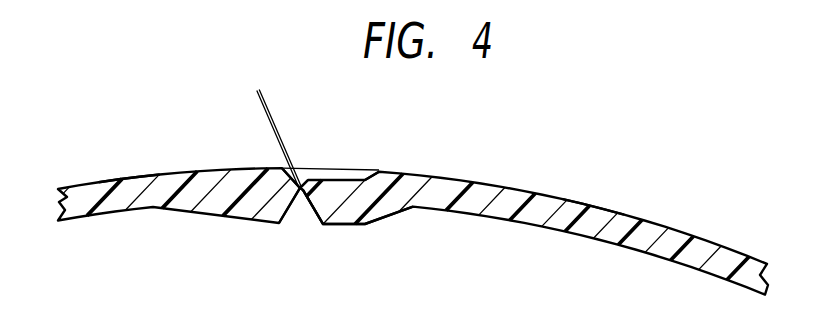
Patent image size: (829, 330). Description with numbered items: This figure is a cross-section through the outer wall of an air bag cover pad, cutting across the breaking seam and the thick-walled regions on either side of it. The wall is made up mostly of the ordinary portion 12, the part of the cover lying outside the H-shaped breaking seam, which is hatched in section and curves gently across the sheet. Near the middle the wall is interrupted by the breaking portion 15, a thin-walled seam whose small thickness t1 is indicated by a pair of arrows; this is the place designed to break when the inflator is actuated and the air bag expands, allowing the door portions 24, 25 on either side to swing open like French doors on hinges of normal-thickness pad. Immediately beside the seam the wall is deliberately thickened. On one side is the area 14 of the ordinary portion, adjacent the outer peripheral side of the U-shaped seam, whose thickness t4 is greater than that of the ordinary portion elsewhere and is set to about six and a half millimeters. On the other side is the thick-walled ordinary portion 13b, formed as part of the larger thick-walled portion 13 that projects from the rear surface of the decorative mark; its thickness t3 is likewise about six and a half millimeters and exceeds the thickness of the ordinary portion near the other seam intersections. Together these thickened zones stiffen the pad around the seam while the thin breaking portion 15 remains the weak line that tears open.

The ordinary portion 12 is at (670, 227).
The thick-walled portion 13 is at (383, 208).
The thick-walled ordinary portion 13b is at (374, 170).
The thick-walled area 14 is at (243, 212).
The breaking portion 15 is at (301, 184).
The door portion 24 is at (598, 190).
The door portion 25 is at (126, 170).
The thickness of breaking portion t1 is at (267, 84).
The thickness of thick-walled portion t3 is at (348, 233).
The thickness of thick-walled area t4 is at (279, 233).